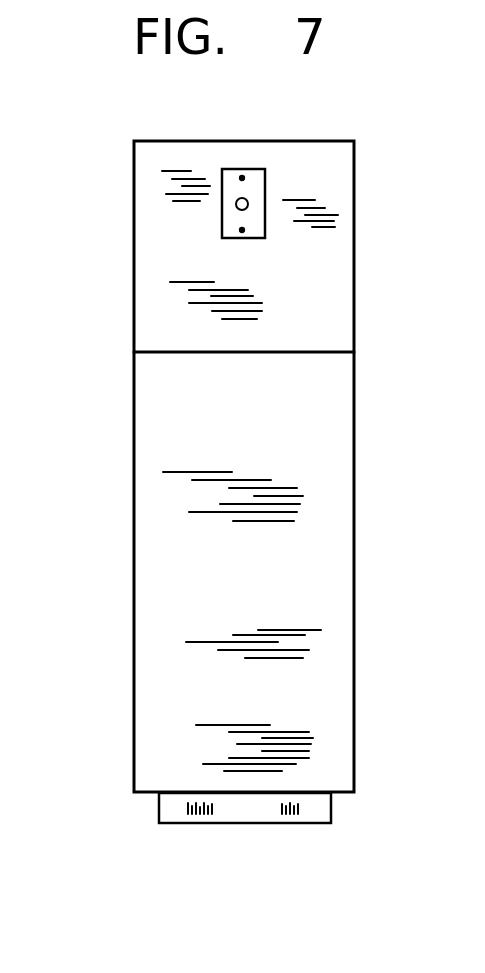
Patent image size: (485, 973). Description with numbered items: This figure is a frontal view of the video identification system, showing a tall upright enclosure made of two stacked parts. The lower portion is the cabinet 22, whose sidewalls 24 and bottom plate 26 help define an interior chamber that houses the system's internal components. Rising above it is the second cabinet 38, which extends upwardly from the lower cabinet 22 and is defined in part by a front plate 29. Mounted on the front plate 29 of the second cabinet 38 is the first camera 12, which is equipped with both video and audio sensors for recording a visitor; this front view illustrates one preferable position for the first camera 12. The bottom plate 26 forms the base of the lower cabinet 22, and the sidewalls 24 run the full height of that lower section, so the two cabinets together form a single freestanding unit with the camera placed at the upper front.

The second cabinet 38 is at (131, 138).
The first camera 12 is at (265, 188).
The front plate 29 is at (323, 293).
The cabinet 22 is at (357, 373).
The sidewalls 24 is at (260, 585).
The bottom plate 26 is at (339, 794).